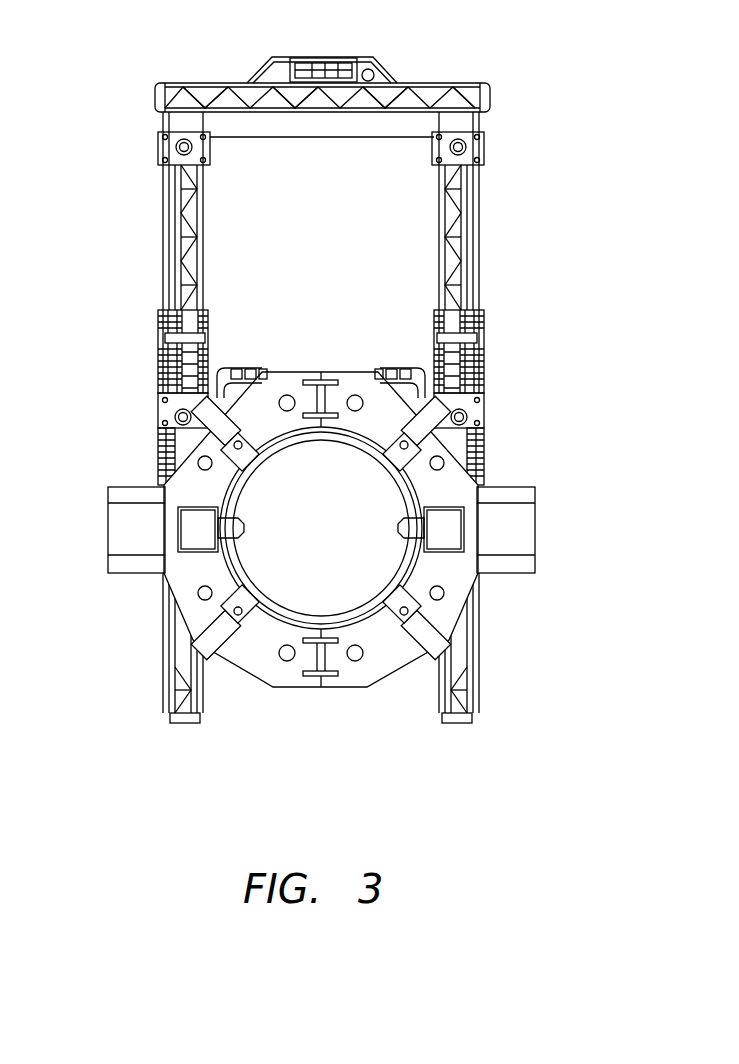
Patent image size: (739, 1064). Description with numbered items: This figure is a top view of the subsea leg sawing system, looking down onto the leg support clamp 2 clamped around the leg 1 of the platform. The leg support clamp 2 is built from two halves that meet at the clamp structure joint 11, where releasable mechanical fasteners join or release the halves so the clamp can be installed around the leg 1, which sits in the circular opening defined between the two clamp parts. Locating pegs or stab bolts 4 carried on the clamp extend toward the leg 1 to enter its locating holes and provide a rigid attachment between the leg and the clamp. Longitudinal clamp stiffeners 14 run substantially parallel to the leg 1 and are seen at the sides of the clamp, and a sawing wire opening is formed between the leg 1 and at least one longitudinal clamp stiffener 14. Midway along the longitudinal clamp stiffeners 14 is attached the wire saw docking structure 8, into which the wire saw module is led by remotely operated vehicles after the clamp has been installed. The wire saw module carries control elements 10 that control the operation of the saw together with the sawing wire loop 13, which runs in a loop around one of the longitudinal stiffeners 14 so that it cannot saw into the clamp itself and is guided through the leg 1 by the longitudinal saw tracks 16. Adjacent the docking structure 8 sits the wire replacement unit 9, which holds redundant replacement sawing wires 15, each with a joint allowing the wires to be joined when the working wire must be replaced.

The leg 1 is at (413, 560).
The leg support clamp 2 is at (438, 642).
The locating pegs or stab bolts 4 is at (198, 532).
The wire saw docking structure 8 is at (158, 362).
The wire replacement unit 9 is at (253, 368).
The control elements 10 is at (337, 70).
The clamp structure joint 11 is at (322, 688).
The sawing wire loop 13 is at (393, 135).
The longitudinal clamp stiffeners 14 is at (521, 486).
The replacement sawing wires 15 is at (486, 357).
The longitudinal saw tracks 16 is at (455, 240).